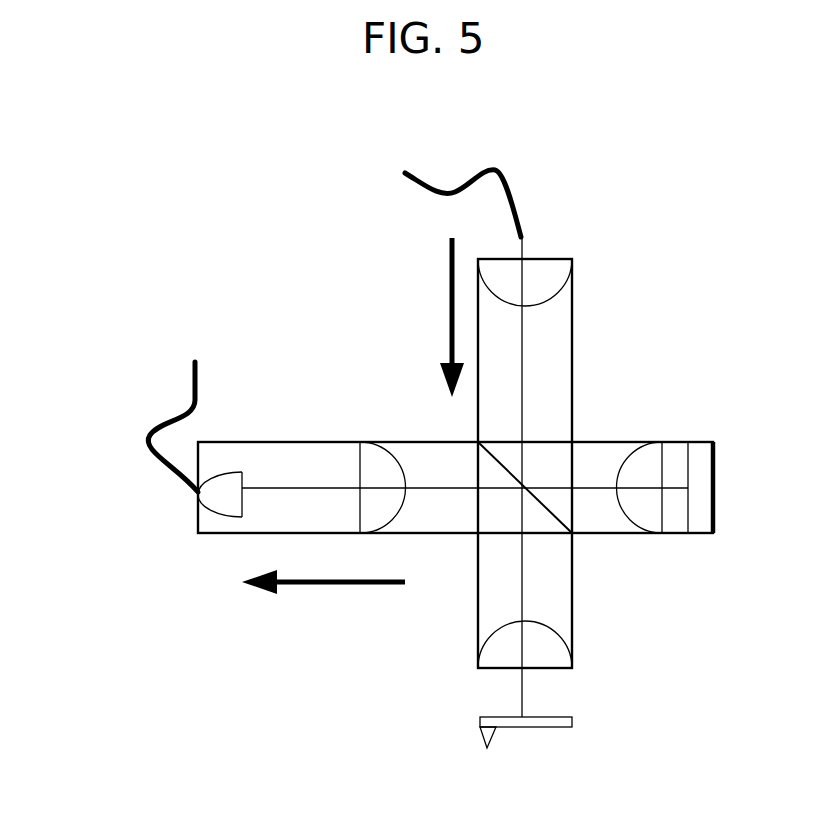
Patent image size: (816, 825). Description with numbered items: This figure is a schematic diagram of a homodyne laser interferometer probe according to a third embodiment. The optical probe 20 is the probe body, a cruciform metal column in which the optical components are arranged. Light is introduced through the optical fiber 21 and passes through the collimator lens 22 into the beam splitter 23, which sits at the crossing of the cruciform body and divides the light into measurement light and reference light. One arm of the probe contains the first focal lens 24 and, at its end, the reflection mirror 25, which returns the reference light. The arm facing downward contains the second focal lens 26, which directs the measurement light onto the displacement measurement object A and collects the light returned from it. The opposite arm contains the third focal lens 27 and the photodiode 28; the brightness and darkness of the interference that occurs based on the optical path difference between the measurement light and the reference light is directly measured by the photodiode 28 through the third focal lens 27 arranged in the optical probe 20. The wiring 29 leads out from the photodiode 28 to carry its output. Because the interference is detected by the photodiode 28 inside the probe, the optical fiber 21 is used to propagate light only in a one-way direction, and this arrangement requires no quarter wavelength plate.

The optical probe 20 is at (572, 326).
The optical fiber 21 is at (517, 203).
The collimator lens 22 is at (555, 273).
The beam splitter 23 is at (543, 442).
The first focal lens 24 is at (649, 522).
The reflection mirror 25 is at (702, 522).
The second focal lens 26 is at (495, 662).
The third focal lens 27 is at (370, 458).
The photodiode 28 is at (230, 478).
The wiring 29 is at (192, 392).
The displacement measurement object A is at (480, 720).